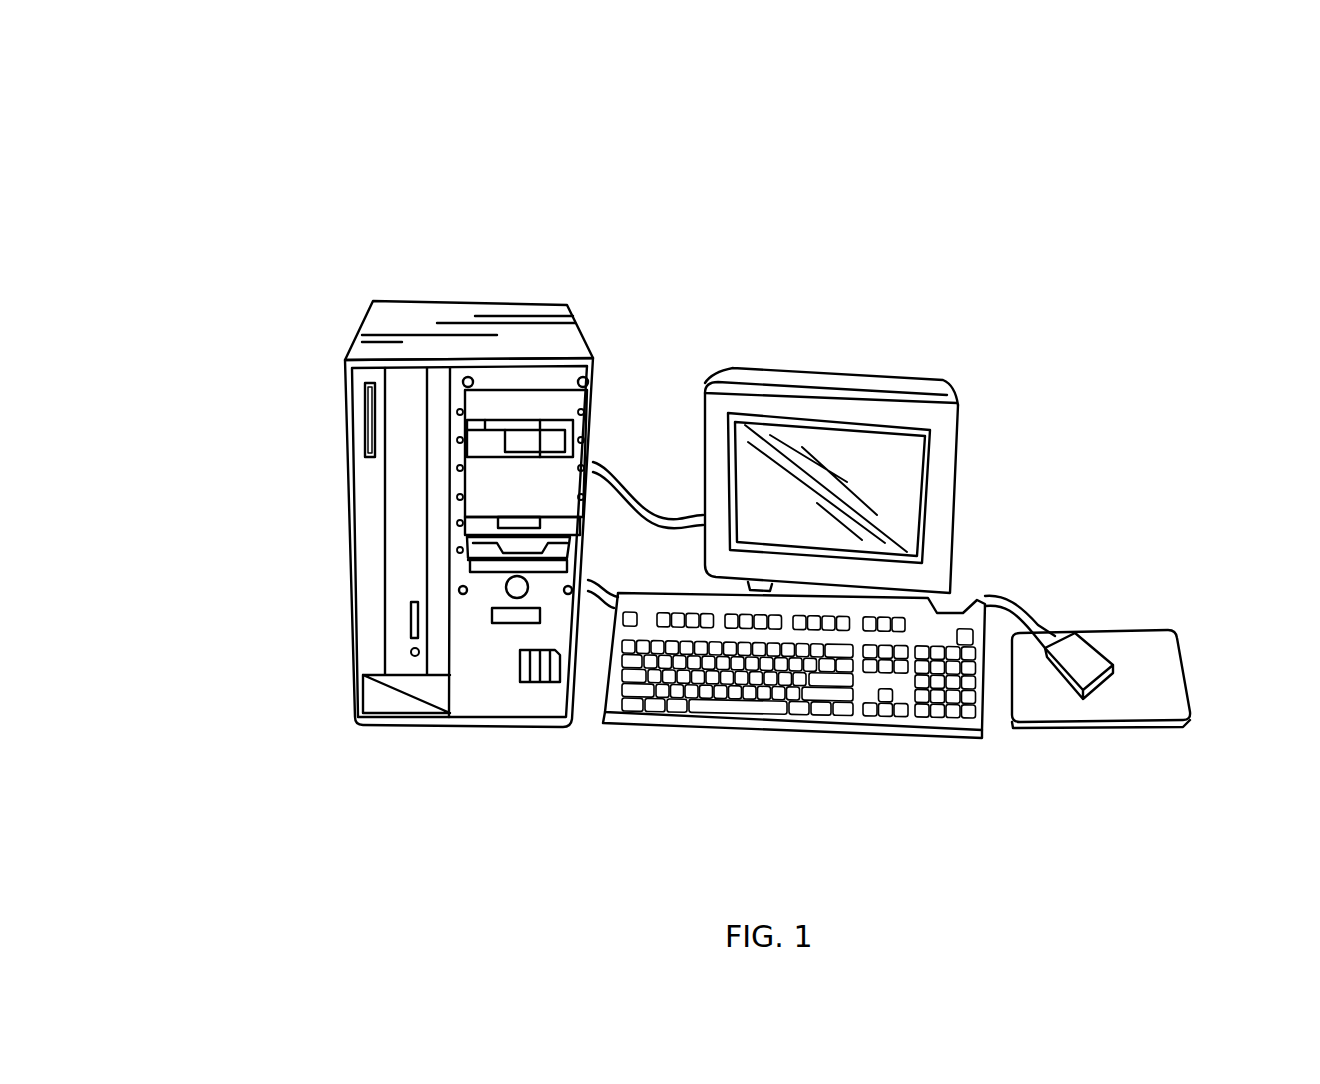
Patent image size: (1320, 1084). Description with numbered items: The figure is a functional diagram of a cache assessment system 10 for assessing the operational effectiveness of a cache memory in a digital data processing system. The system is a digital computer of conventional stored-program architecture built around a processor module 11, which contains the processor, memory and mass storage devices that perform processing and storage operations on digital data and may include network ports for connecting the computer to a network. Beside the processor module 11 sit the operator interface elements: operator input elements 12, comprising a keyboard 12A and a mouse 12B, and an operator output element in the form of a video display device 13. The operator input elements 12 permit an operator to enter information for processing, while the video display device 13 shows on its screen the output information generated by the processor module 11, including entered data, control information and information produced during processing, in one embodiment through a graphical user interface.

The cache assessment system 10 is at (245, 150).
The processor module 11 is at (433, 302).
The operator input element(s) 12 is at (994, 745).
The keyboard 12A is at (773, 728).
The mouse 12B is at (1157, 722).
The video display device 13 is at (957, 462).